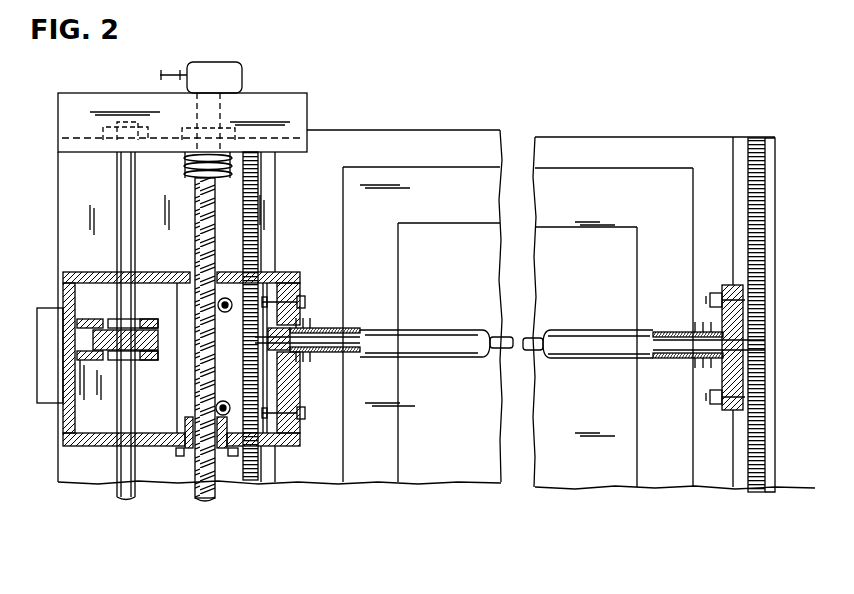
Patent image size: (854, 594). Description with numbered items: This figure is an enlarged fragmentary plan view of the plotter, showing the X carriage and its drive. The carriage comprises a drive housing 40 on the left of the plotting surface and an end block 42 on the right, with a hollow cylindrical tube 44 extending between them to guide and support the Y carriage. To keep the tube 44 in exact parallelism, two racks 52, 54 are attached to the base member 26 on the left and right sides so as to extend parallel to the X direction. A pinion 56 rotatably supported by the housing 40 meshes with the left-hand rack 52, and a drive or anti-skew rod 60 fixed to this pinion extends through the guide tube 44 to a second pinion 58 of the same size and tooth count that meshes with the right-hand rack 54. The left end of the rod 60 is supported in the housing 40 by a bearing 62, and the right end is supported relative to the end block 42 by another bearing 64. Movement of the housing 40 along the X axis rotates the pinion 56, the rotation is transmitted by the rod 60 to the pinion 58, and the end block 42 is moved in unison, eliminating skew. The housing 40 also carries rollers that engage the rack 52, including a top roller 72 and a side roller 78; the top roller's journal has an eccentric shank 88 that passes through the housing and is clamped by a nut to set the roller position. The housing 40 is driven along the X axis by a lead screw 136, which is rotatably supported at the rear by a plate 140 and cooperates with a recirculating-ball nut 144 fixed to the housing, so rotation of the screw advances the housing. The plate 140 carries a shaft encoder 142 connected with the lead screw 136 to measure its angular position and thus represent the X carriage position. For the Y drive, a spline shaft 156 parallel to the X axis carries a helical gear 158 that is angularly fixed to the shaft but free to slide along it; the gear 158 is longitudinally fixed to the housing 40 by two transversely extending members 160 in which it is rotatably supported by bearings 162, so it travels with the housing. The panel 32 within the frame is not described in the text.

The base member 26 is at (402, 134).
The panel 32 is at (460, 274).
The drive housing 40 is at (71, 272).
The end block 42 is at (726, 288).
The hollow cylindrical tube 44 is at (443, 356).
The rack 52 is at (259, 180).
The rack 54 is at (769, 148).
The pinion 56 is at (296, 354).
The pinion 58 is at (763, 352).
The drive or anti-skew rod 60 is at (358, 352).
The bearing 62 is at (290, 328).
The bearing 64 is at (745, 375).
The top roller 72 is at (278, 272).
The side roller 78 is at (226, 296).
The shank 88 is at (305, 302).
The lead screw 136 is at (217, 494).
The plate 140 is at (308, 143).
The shaft encoder 142 is at (243, 79).
The nut 144 is at (190, 457).
The spline shaft 156 is at (115, 490).
The helical gear 158 is at (112, 320).
The transversely extending member 160 is at (158, 318).
The bearing 162 is at (140, 319).